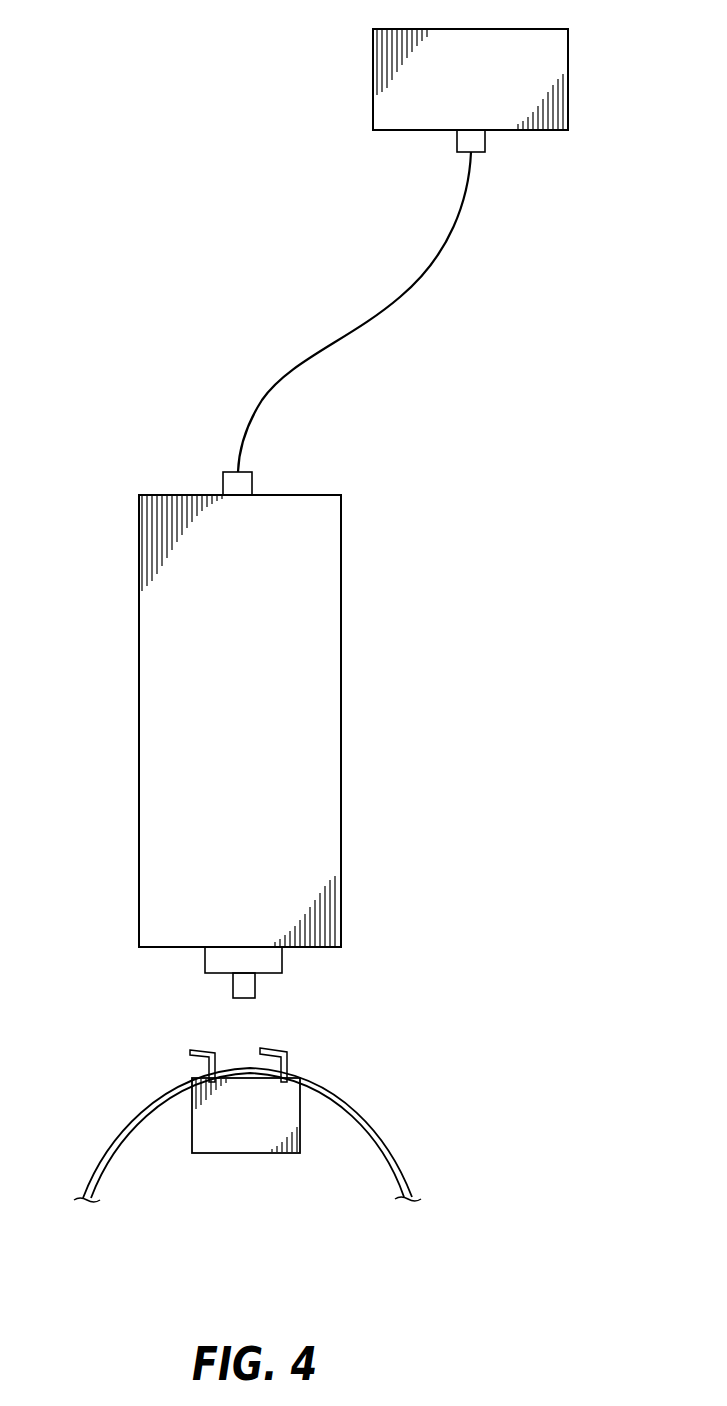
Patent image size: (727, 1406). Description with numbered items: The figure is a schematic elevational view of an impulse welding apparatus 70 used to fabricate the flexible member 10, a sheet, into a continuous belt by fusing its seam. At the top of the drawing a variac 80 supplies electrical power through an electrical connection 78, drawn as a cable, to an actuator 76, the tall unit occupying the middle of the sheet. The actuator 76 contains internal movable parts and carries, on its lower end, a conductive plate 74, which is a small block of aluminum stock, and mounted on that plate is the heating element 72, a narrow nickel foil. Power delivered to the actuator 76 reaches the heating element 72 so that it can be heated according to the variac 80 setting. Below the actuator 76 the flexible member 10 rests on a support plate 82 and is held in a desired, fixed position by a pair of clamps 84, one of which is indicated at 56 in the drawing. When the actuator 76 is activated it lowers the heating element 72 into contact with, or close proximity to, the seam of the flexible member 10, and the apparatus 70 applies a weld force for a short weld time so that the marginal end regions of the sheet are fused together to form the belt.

The flexible member 10 is at (118, 1120).
The mounting clip 56 is at (241, 1062).
The impulse welding apparatus 70 is at (149, 297).
The heating element 72 is at (233, 985).
The conductive plate 74 is at (205, 958).
The actuator 76 is at (160, 745).
The electrical connection 78 is at (400, 297).
The variac 80 is at (373, 72).
The support plate 82 is at (245, 1154).
The clamps 84 is at (283, 1052).